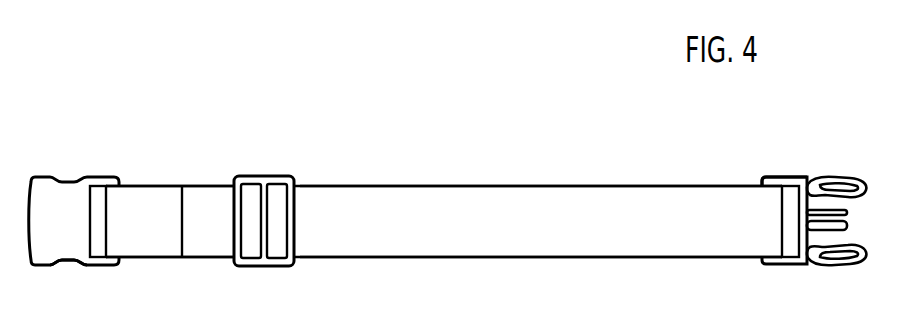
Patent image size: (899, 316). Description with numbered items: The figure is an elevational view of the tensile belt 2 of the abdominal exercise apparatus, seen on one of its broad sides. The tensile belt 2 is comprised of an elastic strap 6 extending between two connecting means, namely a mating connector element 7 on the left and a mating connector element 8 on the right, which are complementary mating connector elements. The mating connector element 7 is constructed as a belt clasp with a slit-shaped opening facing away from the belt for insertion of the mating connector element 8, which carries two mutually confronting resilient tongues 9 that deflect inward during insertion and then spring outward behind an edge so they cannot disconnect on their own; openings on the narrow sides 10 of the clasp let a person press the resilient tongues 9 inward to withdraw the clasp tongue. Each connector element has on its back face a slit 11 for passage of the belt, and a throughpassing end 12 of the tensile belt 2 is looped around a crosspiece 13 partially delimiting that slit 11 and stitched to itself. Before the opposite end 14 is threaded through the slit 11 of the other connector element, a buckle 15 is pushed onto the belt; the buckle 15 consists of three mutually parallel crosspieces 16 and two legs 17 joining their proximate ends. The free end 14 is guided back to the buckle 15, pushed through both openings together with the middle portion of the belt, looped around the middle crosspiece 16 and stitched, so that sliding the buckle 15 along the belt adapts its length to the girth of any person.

The tensile belt 2 is at (633, 184).
The elastic strap 6 is at (392, 203).
The mating connector element 7 is at (48, 203).
The mating connector element 8 is at (793, 183).
The resilient tongues 9 is at (835, 180).
The narrow sides 10 is at (67, 262).
The slit 11 is at (98, 203).
The throughpassing end 12 is at (747, 238).
The crosspiece 13 is at (772, 178).
The opposite end 14 is at (212, 210).
The buckle 15 is at (251, 184).
The crosspieces 16 is at (262, 236).
The legs 17 is at (278, 184).